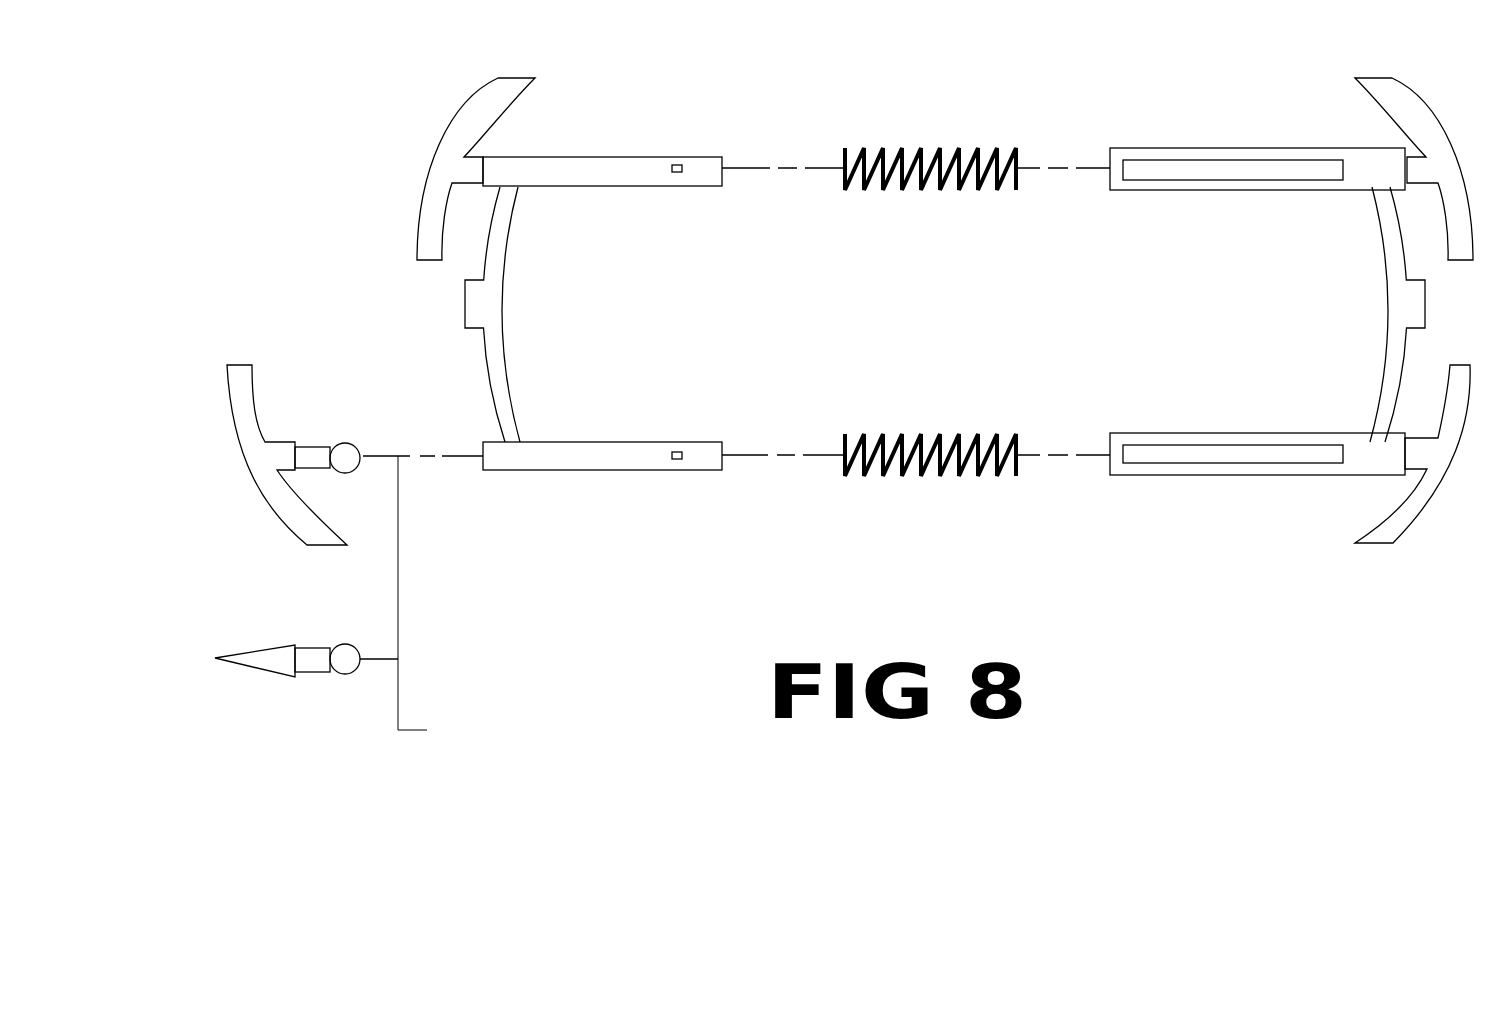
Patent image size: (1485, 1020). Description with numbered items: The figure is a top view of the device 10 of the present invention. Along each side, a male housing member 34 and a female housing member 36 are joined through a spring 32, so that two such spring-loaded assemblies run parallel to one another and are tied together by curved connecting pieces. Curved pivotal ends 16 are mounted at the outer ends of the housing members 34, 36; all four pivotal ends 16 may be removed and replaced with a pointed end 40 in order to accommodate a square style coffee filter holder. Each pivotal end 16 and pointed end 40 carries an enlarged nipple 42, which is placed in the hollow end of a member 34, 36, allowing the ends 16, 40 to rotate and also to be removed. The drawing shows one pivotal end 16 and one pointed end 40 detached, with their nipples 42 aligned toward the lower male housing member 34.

The device 10 is at (916, 378).
The pivotal end 16 is at (237, 448).
The spring 32 is at (907, 148).
The male housing member 34 is at (652, 470).
The female housing member 36 is at (1210, 472).
The pointed end 40 is at (270, 648).
The enlarged nipple 42 is at (342, 443).